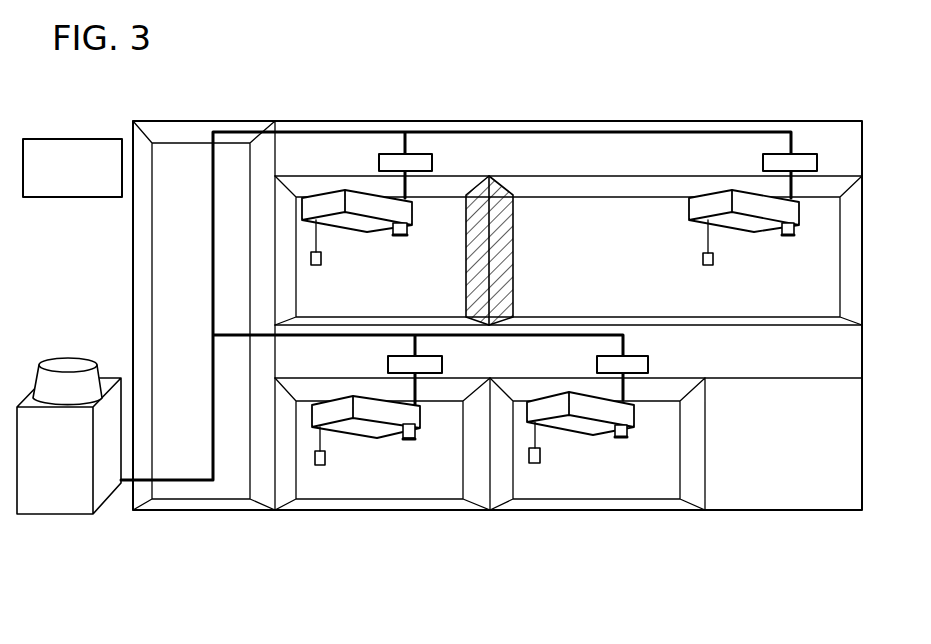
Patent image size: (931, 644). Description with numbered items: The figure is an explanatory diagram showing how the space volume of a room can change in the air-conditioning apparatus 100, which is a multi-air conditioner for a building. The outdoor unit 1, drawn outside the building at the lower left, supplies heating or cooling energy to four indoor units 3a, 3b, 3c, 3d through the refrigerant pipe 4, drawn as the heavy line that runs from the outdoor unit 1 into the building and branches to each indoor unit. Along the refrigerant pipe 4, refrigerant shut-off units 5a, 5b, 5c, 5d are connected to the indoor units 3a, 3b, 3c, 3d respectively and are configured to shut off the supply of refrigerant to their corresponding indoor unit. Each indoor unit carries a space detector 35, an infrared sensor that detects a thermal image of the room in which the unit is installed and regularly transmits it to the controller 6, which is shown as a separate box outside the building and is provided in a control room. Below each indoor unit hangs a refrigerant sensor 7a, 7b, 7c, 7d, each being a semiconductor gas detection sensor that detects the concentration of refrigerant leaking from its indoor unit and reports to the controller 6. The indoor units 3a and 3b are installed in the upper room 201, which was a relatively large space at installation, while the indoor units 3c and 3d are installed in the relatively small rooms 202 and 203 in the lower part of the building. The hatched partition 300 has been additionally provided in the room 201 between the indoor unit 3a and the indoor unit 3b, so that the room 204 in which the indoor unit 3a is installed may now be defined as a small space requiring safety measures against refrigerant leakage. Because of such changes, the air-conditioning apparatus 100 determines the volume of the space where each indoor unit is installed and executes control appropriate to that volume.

The outdoor unit 1 is at (54, 356).
The indoor unit 3a is at (358, 236).
The indoor unit 3b is at (747, 236).
The indoor unit 3c is at (367, 440).
The indoor unit 3d is at (580, 437).
The refrigerant pipe 4 is at (476, 132).
The refrigerant shut-off unit 5a is at (379, 166).
The refrigerant shut-off unit 5b is at (763, 166).
The refrigerant shut-off unit 5c is at (442, 362).
The refrigerant shut-off unit 5d is at (648, 364).
The controller 6 is at (52, 139).
The refrigerant sensor 7a is at (319, 266).
The refrigerant sensor 7b is at (711, 266).
The refrigerant sensor 7c is at (321, 466).
The refrigerant sensor 7d is at (536, 464).
The space detector 35 is at (399, 237).
The air-conditioning apparatus 100 is at (497, 619).
The room 201 is at (828, 270).
The room 202 is at (440, 490).
The room 203 is at (662, 490).
The room 204 is at (438, 210).
The partition 300 is at (514, 247).